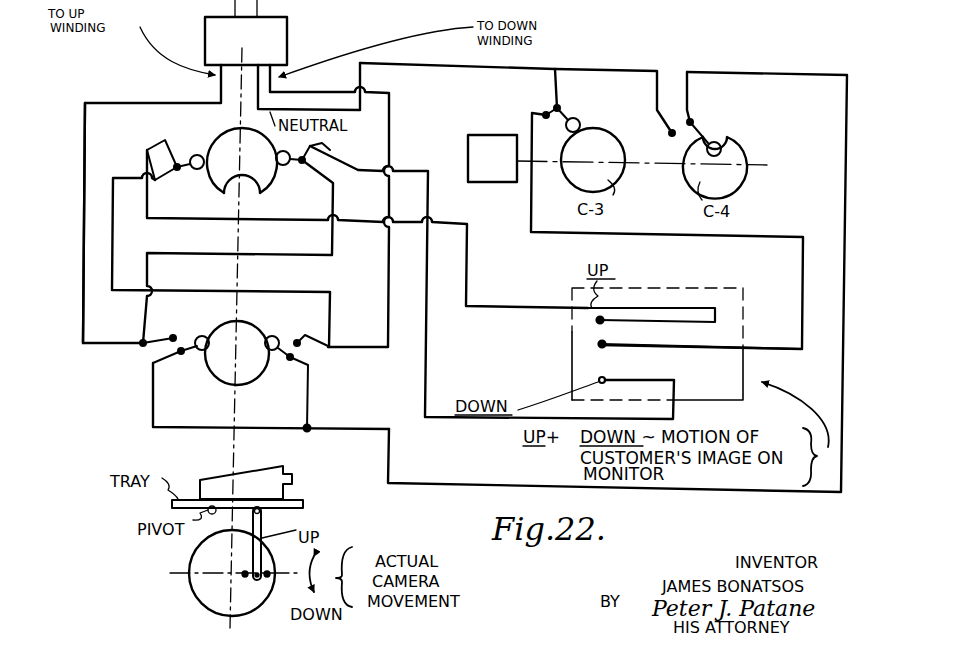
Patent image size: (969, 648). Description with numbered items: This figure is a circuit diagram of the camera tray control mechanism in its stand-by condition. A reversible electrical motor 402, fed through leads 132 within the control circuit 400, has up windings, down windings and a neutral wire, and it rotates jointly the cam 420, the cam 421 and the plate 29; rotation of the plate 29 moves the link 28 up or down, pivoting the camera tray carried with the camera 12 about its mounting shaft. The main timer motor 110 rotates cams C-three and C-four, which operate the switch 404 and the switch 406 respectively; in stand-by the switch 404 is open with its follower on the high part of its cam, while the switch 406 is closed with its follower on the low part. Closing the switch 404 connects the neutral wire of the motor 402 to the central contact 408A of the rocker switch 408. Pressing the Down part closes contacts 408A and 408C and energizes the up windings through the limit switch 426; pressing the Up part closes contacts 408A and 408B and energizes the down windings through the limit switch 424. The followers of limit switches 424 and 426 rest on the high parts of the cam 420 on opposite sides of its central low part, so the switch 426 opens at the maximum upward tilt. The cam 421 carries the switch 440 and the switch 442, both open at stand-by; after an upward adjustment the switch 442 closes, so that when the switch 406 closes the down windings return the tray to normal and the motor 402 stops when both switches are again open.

The motor leads cable 132 is at (286, 8).
The reversible electrical motor 402 is at (281, 43).
The control circuit 400 is at (168, 100).
The limit switch 424 is at (180, 157).
The cam 420 is at (258, 174).
The limit switch 426 is at (325, 153).
The switch 404 is at (540, 100).
The main timer motor 110 is at (481, 136).
The switch 406 is at (655, 108).
The rocker switch 408 is at (765, 284).
The central contact 408A is at (606, 348).
The contact 408B is at (605, 323).
The contact 408C is at (598, 380).
The switch 440 is at (192, 320).
The cam 421 is at (223, 358).
The switch 442 is at (303, 350).
The camera body 12 is at (285, 468).
The link 28 is at (262, 530).
The plate 29 is at (203, 582).